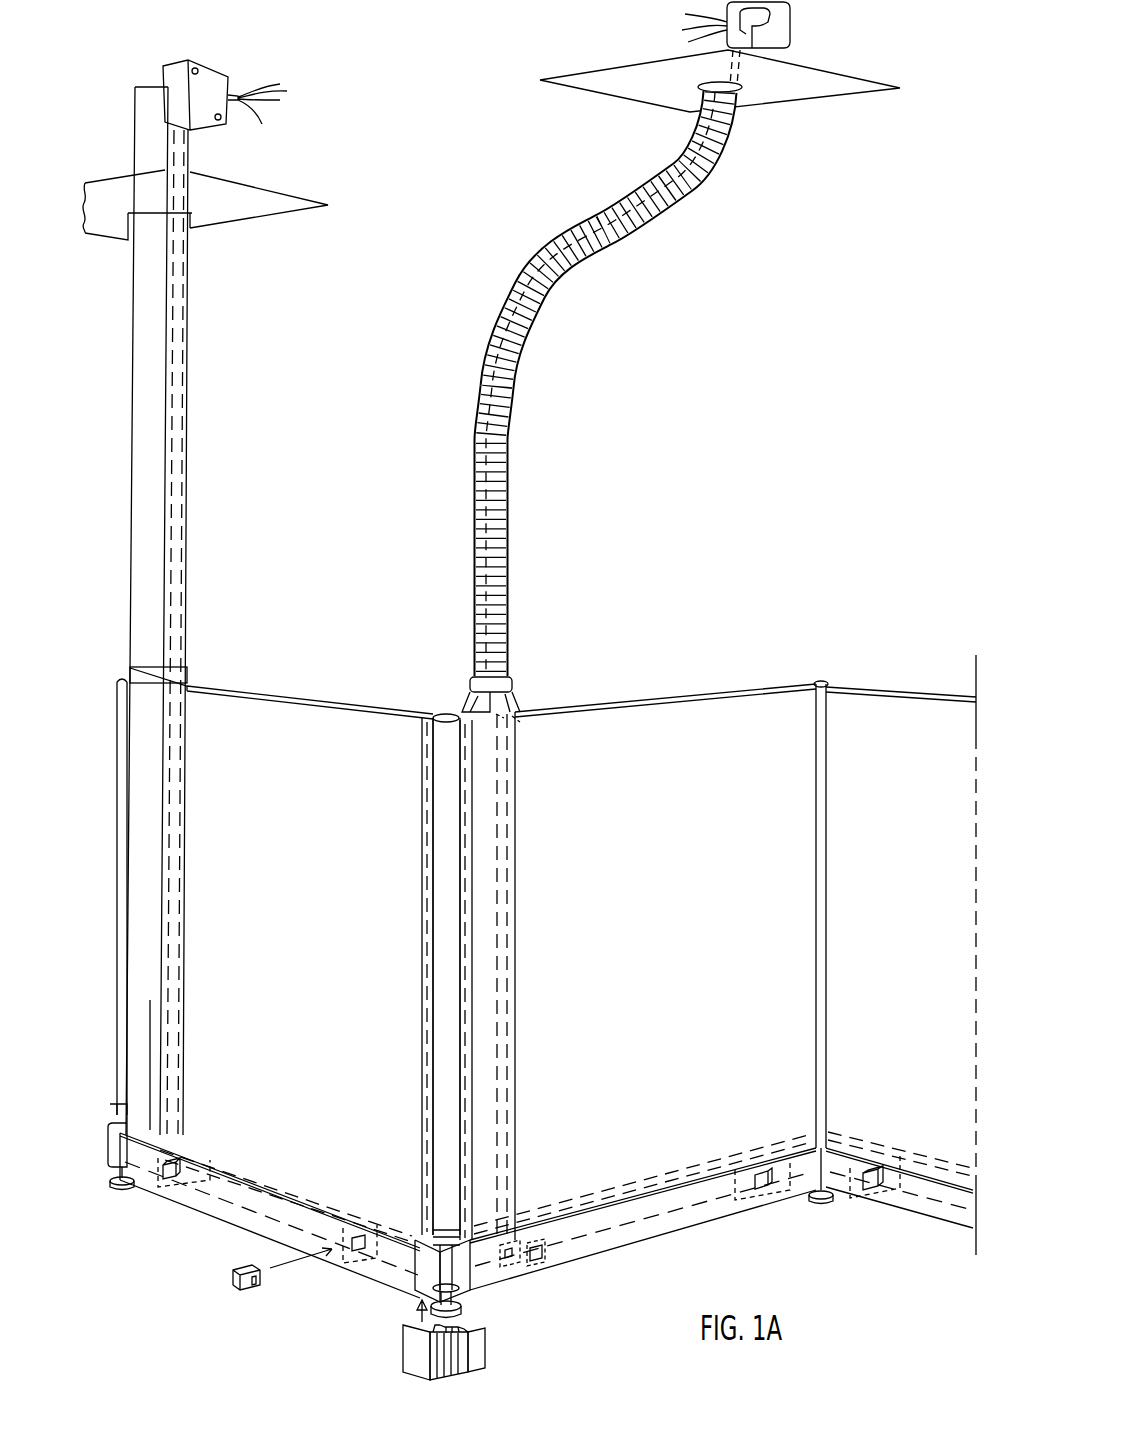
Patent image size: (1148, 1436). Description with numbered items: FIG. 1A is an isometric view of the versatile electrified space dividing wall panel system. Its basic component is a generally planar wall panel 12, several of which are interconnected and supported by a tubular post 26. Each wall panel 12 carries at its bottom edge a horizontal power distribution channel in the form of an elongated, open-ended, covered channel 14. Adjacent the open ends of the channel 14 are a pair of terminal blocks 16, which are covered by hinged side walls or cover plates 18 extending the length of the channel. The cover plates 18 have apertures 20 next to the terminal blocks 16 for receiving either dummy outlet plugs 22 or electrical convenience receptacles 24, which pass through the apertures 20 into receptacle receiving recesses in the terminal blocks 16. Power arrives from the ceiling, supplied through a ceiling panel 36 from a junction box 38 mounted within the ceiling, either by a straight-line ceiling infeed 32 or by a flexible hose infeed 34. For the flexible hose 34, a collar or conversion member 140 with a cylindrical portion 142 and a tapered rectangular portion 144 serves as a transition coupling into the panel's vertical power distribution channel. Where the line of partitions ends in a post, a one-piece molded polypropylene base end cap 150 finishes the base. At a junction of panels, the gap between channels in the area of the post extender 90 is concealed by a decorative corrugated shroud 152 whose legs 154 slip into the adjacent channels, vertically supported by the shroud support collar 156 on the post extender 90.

The wall panel 12 is at (306, 913).
The covered channel 14 is at (208, 1206).
The terminal blocks 16 is at (170, 1180).
The cover plates 18 is at (246, 1222).
The apertures 20 is at (372, 1250).
The dummy outlet plugs 22 is at (866, 1190).
The electrical convenience receptacles 24 is at (528, 1268).
The tubular post 26 is at (125, 703).
The straight-line ceiling infeed 32 is at (182, 322).
The flexible hose infeed 34 is at (498, 453).
The ceiling panel 36 is at (256, 208).
The junction box 38 is at (202, 68).
The post extender 90 is at (440, 1270).
The collar or conversion member 140 is at (512, 692).
The cylindrical portion 142 is at (470, 688).
The tapered rectangular portion 144 is at (518, 714).
The base end cap 150 is at (110, 1147).
The decorative corrugated shroud 152 is at (470, 1366).
The legs 154 is at (410, 1345).
The shroud support collar 156 is at (454, 1292).